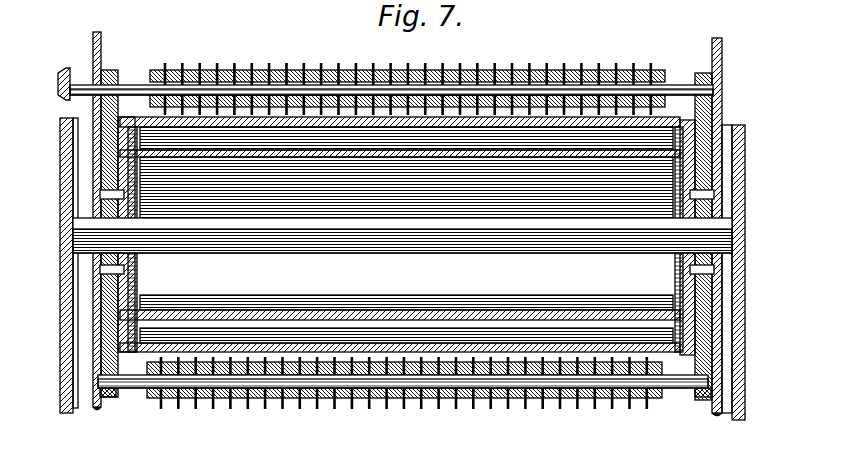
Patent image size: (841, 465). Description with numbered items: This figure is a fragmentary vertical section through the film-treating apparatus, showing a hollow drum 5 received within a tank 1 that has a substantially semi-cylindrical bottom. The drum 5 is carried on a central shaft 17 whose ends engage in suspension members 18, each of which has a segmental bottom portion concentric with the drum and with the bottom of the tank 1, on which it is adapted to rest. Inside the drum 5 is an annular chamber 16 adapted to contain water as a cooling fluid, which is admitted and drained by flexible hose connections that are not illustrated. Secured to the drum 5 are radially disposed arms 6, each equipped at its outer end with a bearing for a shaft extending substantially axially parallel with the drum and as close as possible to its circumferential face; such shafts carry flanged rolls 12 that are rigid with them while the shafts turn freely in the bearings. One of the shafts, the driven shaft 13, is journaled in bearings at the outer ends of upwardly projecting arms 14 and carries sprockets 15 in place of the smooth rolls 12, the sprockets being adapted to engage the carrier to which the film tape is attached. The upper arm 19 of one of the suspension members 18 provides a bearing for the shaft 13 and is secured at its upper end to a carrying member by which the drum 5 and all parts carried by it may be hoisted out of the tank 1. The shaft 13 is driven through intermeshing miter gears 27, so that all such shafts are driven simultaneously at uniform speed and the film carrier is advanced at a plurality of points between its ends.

The tank 1 is at (60, 312).
The hollow drum 5 is at (624, 274).
The radially disposed arms 6 is at (101, 350).
The flanged rolls 12 is at (202, 412).
The driven shaft 13 is at (128, 86).
The upwardly projecting arms 14 is at (63, 126).
The sprockets 15 is at (222, 64).
The annular chamber 16 is at (655, 332).
The central shaft 17 is at (461, 238).
The suspension members 18 is at (100, 408).
The upper arm 19 is at (101, 34).
The intermeshing miter gears 27 is at (58, 87).